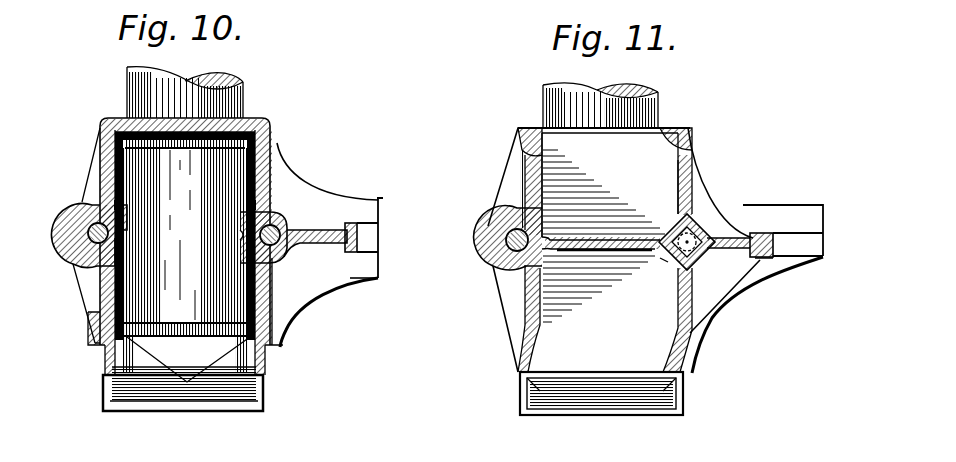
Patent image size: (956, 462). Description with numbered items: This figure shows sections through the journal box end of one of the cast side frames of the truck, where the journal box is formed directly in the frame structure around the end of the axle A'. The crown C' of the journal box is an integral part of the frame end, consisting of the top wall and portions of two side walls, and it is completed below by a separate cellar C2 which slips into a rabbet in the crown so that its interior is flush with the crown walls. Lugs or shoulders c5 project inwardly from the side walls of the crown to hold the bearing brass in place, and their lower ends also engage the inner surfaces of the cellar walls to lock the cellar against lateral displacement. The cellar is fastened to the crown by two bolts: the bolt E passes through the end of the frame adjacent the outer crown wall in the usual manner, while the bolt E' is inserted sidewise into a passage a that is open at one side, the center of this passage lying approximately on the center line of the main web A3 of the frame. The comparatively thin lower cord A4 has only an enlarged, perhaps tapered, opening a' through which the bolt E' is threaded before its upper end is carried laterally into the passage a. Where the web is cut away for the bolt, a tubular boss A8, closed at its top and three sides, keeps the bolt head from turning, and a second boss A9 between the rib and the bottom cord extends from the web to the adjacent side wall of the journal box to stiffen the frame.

In FIG. 10, the axle A' is at (213, 92).
In FIG. 10, the crown of journal box C' is at (161, 246).
In FIG. 11, the crown of journal box C' is at (620, 227).
In FIG. 10, the tapered opening in lower cord a' is at (234, 236).
In FIG. 10, the lugs or shoulders c5 is at (83, 203).
In FIG. 10, the tubular boss A8 is at (160, 304).
In FIG. 11, the tubular boss A8 is at (662, 258).
In FIG. 10, the cellar C2 is at (111, 388).
In FIG. 11, the cellar C2 is at (519, 393).
In FIG. 10, the bolt E is at (82, 240).
In FIG. 10, the bolt E' is at (283, 249).
In FIG. 11, the bolt E' is at (606, 220).
In FIG. 10, the passage a is at (315, 230).
In FIG. 11, the passage a is at (646, 230).
In FIG. 10, the main web of frame A3 is at (335, 246).
In FIG. 11, the main web of frame A3 is at (751, 232).
In FIG. 10, the second boss A9 is at (293, 336).
In FIG. 11, the lower cord of frame A4 is at (803, 272).